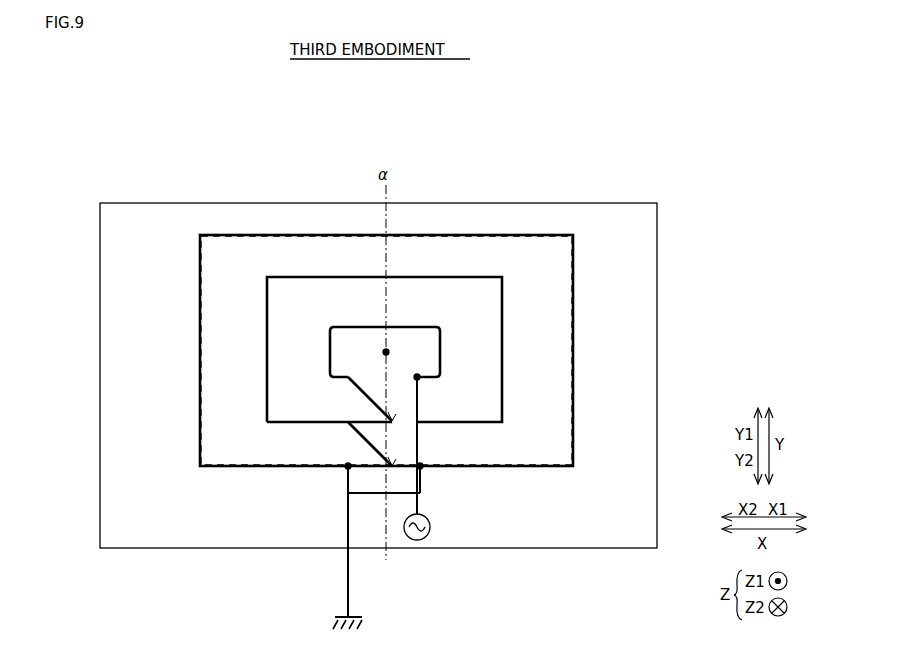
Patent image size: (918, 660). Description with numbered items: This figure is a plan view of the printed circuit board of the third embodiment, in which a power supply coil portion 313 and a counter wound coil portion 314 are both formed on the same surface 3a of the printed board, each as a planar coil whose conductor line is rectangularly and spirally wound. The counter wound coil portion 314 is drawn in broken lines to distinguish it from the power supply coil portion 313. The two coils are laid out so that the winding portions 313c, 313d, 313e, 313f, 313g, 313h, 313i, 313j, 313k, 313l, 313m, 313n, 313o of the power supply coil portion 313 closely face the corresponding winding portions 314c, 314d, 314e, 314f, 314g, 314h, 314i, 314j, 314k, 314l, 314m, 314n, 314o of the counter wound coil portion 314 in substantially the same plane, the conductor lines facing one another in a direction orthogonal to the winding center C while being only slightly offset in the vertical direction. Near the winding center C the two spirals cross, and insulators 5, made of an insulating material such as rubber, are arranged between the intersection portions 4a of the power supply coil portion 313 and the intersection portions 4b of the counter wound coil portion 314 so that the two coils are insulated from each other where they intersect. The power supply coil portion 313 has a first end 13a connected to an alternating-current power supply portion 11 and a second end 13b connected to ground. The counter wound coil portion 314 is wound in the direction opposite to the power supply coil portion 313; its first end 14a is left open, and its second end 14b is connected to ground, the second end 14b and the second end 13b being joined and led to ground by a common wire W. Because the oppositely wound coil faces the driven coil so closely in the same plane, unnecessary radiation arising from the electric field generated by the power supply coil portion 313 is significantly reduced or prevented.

The surface of the printed board 3a is at (620, 215).
The power supply coil portion 313 is at (536, 222).
The counter wound coil portion 314 is at (571, 218).
The winding portion 313c is at (212, 467).
The winding portion 313d is at (200, 425).
The winding portion 313e is at (212, 235).
The winding portion 313f is at (573, 252).
The winding portion 313g is at (542, 467).
The winding portion 313h is at (272, 422).
The winding portion 313i is at (267, 372).
The winding portion 313j is at (280, 277).
The winding portion 313k is at (502, 308).
The winding portion 313l is at (476, 422).
The winding portion 313m is at (330, 336).
The winding portion 313n is at (390, 327).
The winding portion 313o is at (440, 338).
The winding portion 314c is at (226, 467).
The winding portion 314d is at (200, 440).
The winding portion 314e is at (231, 235).
The winding portion 314f is at (573, 270).
The winding portion 314g is at (568, 467).
The winding portion 314h is at (284, 422).
The winding portion 314i is at (267, 390).
The winding portion 314j is at (303, 277).
The winding portion 314k is at (502, 327).
The winding portion 314l is at (490, 422).
The winding portion 314m is at (330, 352).
The winding portion 314n is at (410, 327).
The winding portion 314o is at (440, 357).
The intersection portion 4a is at (384, 414).
The intersection portion 4b is at (401, 414).
The insulator 5 is at (388, 412).
The alternating-current power supply portion 11 is at (414, 541).
The first end of the power supply coil portion 13a is at (418, 375).
The second end of the power supply coil portion 13b is at (347, 468).
The first end of the counter wound coil portion 14a is at (347, 372).
The second end of the counter wound coil portion 14b is at (423, 472).
The common wire W is at (347, 604).
The winding center C is at (393, 372).